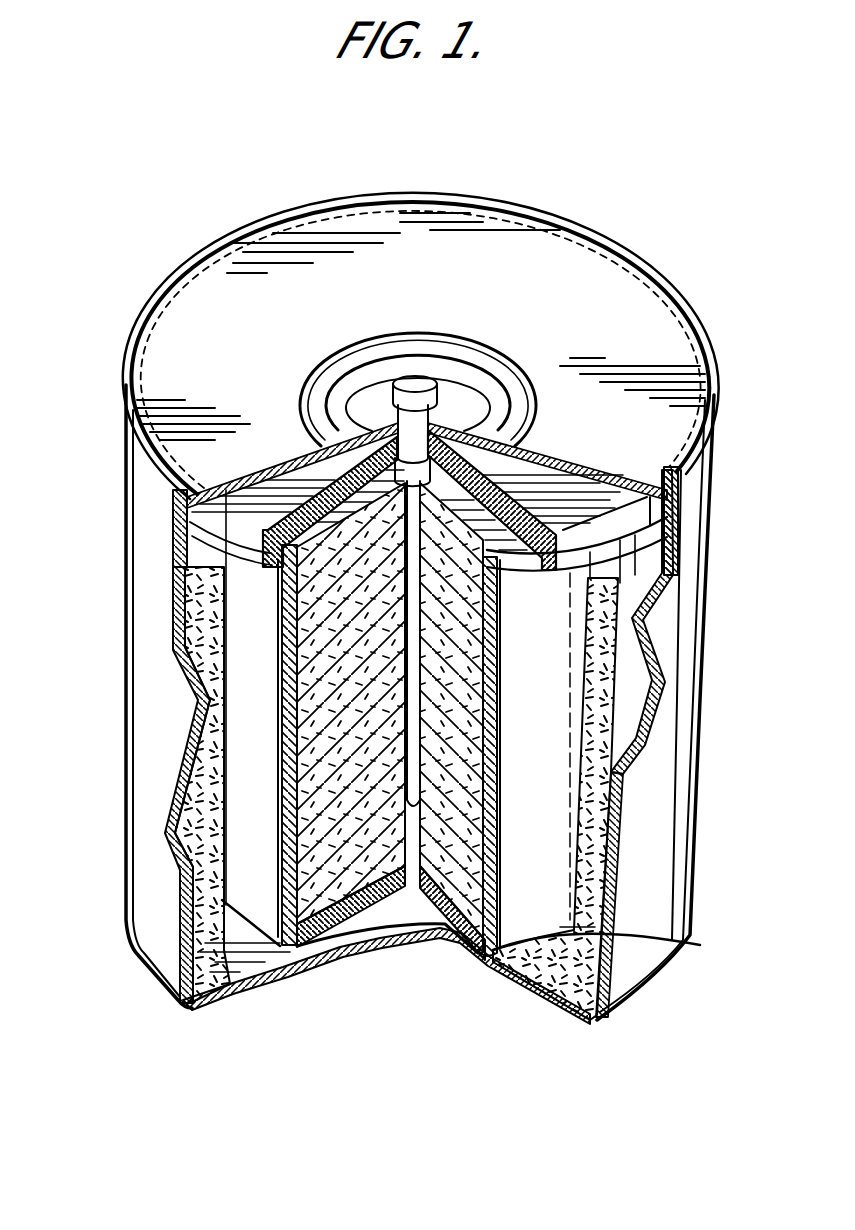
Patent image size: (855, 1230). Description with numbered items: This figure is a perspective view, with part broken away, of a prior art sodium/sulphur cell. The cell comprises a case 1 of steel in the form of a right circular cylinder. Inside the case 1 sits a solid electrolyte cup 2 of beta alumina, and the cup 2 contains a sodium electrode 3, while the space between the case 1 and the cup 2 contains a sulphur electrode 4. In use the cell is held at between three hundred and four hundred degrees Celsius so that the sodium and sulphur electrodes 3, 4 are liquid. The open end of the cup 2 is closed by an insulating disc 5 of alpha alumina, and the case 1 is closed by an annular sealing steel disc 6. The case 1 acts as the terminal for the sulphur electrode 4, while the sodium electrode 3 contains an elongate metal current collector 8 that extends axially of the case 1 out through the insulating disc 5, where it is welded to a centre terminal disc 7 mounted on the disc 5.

The case 1 is at (676, 645).
The solid electrolyte cup 2 is at (237, 808).
The sodium electrode 3 is at (298, 582).
The sulphur electrode 4 is at (600, 942).
The insulating disc 5 is at (583, 488).
The annular sealing steel disc 6 is at (563, 293).
The centre terminal disc 7 is at (373, 405).
The elongate metal current collector 8 is at (407, 694).